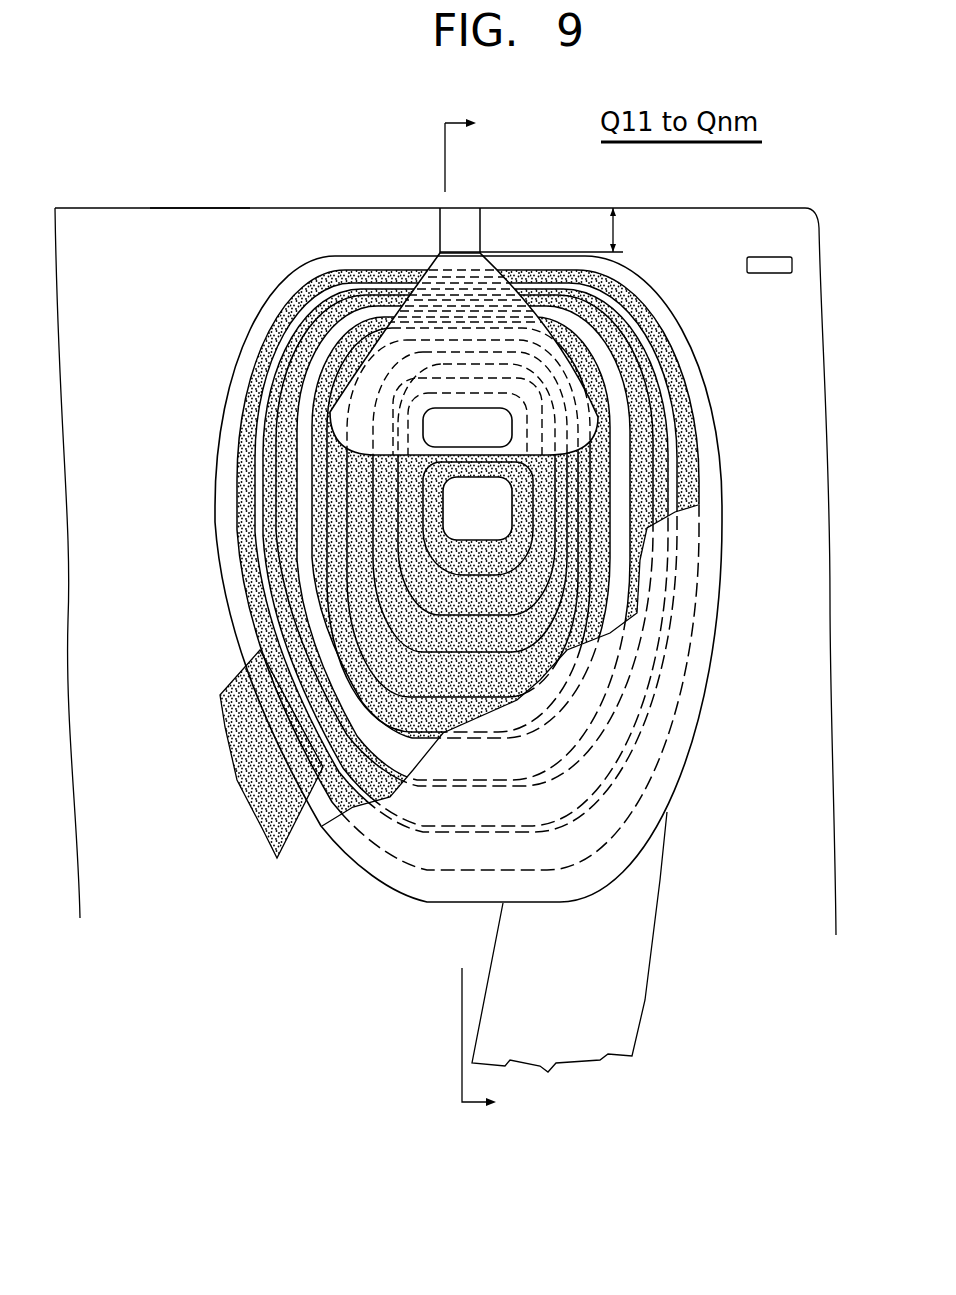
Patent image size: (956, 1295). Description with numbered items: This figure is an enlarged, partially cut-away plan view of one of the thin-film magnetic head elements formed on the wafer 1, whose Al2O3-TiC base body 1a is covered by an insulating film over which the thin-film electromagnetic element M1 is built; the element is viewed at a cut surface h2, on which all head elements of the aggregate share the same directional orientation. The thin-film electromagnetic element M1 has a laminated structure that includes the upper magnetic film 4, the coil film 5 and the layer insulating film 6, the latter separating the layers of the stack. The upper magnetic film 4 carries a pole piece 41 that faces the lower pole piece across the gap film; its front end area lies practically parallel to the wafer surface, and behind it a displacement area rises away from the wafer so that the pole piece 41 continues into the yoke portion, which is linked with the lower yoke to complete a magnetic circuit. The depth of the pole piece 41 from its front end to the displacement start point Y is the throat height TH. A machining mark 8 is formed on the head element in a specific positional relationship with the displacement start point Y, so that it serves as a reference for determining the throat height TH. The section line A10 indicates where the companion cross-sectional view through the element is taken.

The wafer 1 is at (78, 912).
The base body 1a is at (792, 636).
The upper magnetic film 4 is at (418, 313).
The pole piece 41 is at (440, 252).
The coil film 5 is at (280, 583).
The layer insulating film 6 is at (678, 382).
The machining mark 8 is at (777, 273).
The cut surface h2 is at (194, 202).
The thin-film electromagnetic element M1 is at (745, 461).
The throat height TH is at (616, 228).
The displacement start point Y is at (492, 248).
The section line A10- A10 is at (496, 612).